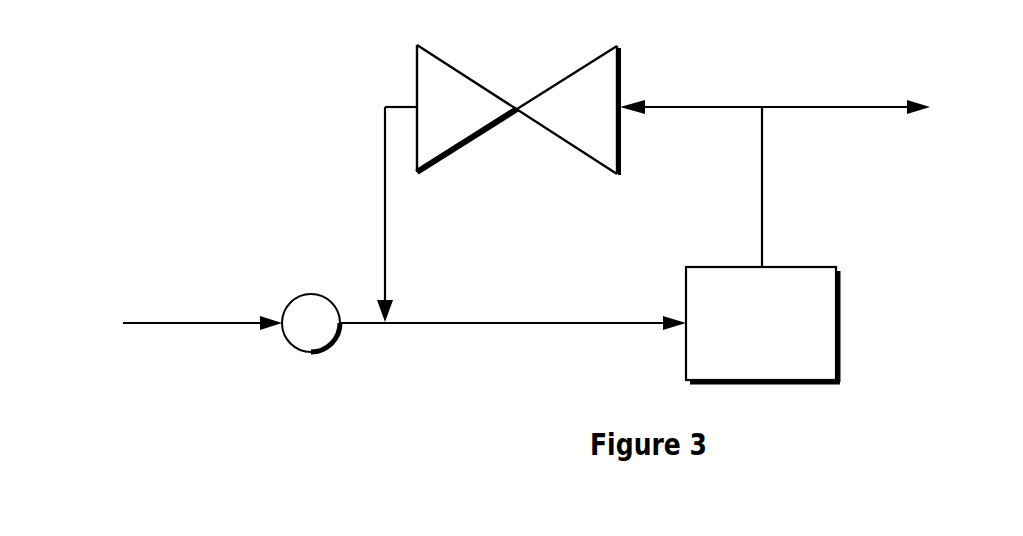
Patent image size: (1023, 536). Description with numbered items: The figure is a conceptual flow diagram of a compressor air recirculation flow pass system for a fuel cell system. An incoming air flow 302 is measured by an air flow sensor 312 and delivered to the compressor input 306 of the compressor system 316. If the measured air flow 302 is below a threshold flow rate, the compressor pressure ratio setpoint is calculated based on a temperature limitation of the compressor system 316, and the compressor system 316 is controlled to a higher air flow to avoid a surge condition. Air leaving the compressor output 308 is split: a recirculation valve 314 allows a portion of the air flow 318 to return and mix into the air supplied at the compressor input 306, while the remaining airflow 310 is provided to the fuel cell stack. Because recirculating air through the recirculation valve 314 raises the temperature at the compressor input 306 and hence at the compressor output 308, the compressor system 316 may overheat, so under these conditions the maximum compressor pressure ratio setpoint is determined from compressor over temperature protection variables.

The air flow 302 is at (177, 323).
The compressor input 306 is at (681, 330).
The compressor output 308 is at (762, 266).
The remaining airflow 310 is at (939, 108).
The air flow sensor 312 is at (326, 333).
The recirculation valve 314 is at (571, 73).
The compressor system 316 is at (776, 336).
The air flow 318 is at (765, 121).